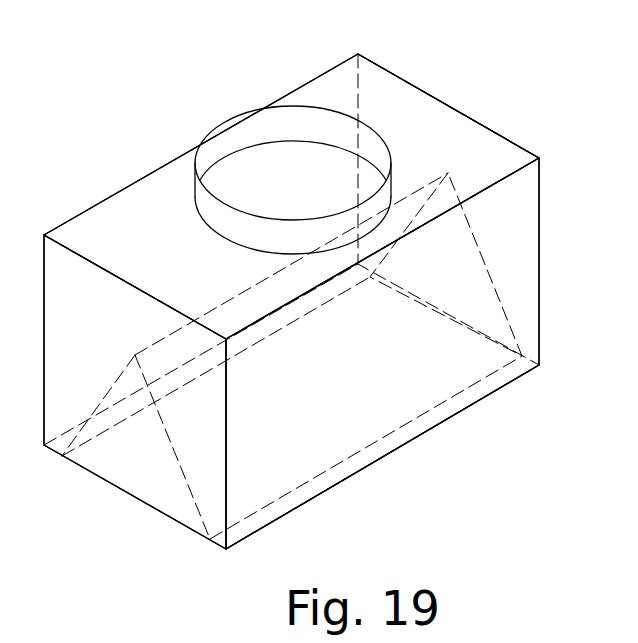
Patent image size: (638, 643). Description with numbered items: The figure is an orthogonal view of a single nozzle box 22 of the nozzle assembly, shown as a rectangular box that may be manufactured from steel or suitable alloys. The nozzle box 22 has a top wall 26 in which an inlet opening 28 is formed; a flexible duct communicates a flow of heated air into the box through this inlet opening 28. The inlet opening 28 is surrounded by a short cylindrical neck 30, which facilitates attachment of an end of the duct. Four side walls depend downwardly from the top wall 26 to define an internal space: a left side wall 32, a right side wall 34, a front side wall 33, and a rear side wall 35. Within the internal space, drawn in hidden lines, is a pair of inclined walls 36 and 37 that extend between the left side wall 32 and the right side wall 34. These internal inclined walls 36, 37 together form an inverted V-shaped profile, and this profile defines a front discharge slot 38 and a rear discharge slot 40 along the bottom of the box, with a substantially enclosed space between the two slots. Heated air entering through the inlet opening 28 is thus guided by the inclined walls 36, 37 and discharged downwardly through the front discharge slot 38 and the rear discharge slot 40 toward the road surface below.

The nozzle box 22 is at (121, 123).
The top wall 26 is at (137, 212).
The inlet opening 28 is at (291, 166).
The neck 30 is at (212, 128).
The left side wall 32 is at (63, 272).
The front side wall 33 is at (340, 100).
The right side wall 34 is at (392, 118).
The rear side wall 35 is at (525, 238).
The inclined wall 36 is at (62, 456).
The inclined wall 37 is at (180, 467).
The front discharge slot 38 is at (276, 333).
The rear discharge slot 40 is at (327, 497).